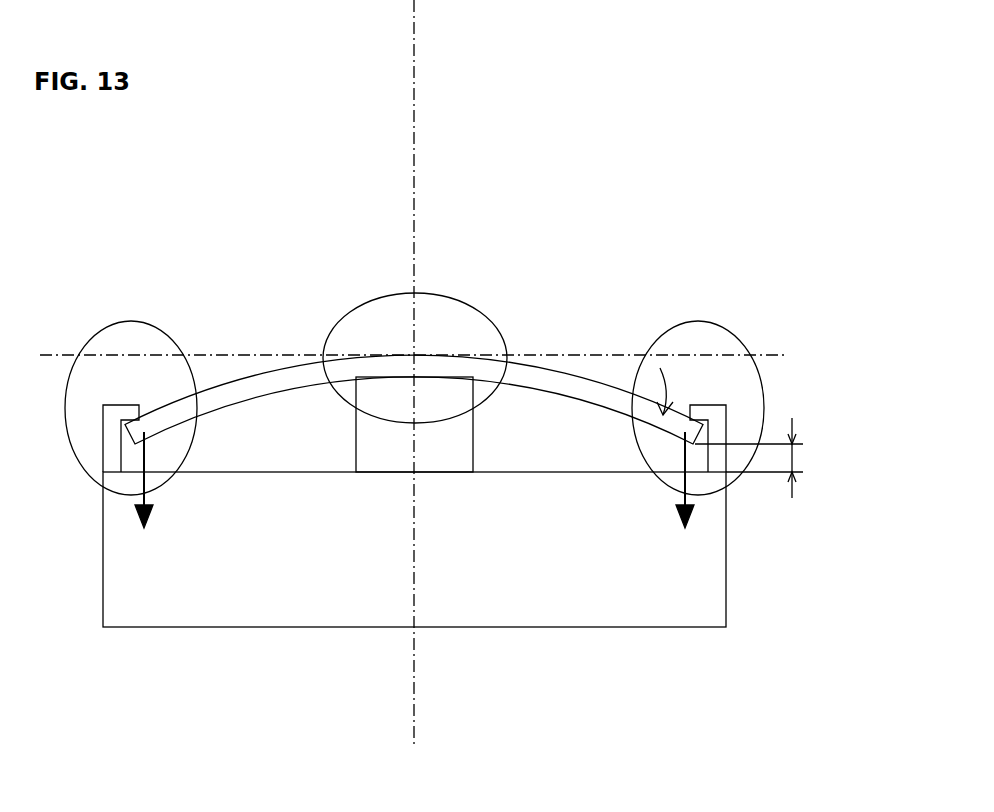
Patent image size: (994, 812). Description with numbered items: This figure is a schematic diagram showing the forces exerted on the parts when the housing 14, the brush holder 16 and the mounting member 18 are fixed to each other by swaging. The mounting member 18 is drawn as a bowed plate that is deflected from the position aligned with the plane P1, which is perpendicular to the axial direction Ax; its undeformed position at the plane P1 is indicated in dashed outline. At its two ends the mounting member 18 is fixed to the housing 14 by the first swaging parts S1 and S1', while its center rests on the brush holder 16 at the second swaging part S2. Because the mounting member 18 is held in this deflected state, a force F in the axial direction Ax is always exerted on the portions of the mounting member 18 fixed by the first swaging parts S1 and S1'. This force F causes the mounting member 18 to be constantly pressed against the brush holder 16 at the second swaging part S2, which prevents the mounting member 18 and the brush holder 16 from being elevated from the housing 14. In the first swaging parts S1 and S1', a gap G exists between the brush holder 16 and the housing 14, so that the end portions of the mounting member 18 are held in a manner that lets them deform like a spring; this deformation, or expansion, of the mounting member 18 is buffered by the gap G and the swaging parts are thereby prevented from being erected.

The housing 14 is at (630, 592).
The brush holder 16 is at (372, 443).
The mounting member 18 is at (577, 398).
The axial direction Ax is at (438, 4).
The plane P1 is at (780, 350).
The first swaging part S1 is at (131, 377).
The first swaging part S1' is at (698, 378).
The second swaging part S2 is at (462, 302).
The force F is at (414, 495).
The gap G is at (757, 458).